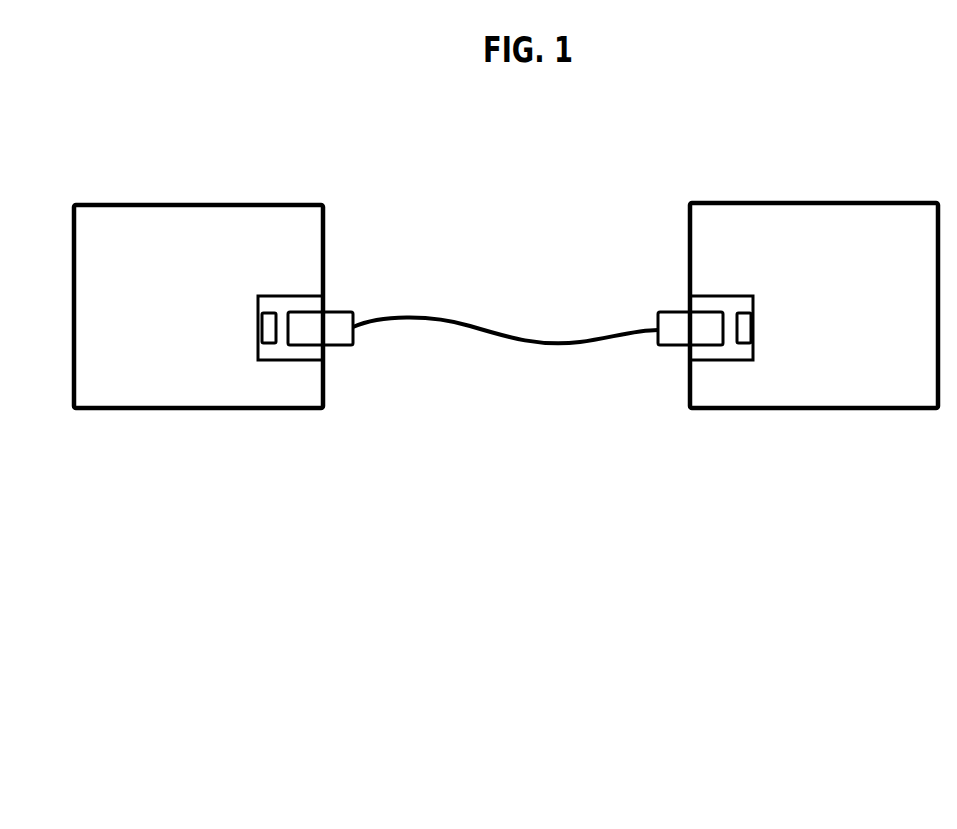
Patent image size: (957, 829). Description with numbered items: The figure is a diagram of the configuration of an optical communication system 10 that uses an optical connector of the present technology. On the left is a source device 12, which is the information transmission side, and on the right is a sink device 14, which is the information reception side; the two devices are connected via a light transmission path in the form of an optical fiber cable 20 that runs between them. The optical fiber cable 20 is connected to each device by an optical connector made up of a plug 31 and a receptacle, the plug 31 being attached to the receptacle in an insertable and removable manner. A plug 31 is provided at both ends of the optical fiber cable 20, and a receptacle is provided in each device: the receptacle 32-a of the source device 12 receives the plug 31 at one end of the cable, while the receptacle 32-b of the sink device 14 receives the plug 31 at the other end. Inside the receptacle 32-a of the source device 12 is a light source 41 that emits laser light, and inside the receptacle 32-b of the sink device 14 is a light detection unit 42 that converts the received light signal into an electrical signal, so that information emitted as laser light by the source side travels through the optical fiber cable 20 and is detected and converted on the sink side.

The optical communication system 10 is at (556, 655).
The source device 12 is at (195, 205).
The sink device 14 is at (813, 203).
The optical fiber cable 20 is at (522, 343).
The plug 31 is at (353, 312).
The receptacle of the source device 32-a is at (282, 409).
The receptacle of the sink device 32-b is at (730, 409).
The light source 41 is at (267, 330).
The light detection unit 42 is at (743, 327).